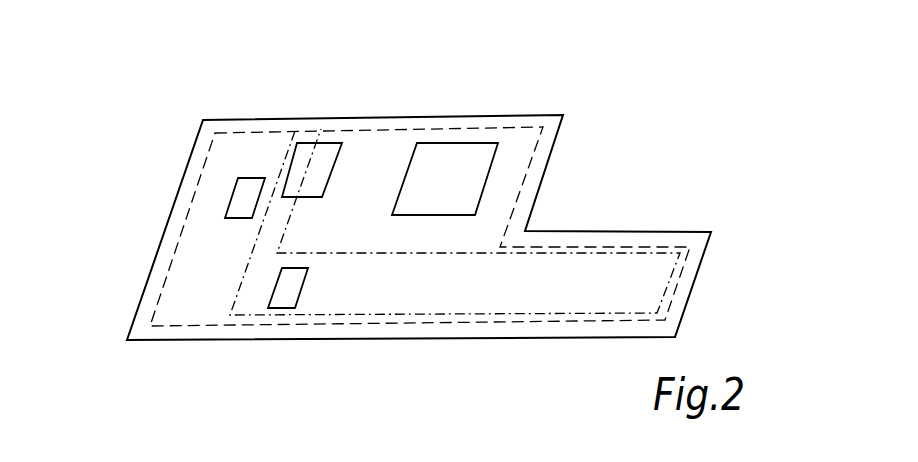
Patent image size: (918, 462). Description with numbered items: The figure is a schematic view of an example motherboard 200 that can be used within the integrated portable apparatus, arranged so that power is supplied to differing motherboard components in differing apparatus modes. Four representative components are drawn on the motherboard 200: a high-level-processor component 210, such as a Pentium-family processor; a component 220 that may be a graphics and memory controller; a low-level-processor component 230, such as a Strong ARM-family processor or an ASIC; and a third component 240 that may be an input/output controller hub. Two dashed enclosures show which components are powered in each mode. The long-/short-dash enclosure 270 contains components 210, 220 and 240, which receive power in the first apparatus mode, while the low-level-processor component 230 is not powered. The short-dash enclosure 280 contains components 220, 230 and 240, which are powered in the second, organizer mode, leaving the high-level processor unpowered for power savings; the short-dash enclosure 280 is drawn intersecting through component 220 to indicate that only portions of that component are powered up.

The motherboard 200 is at (708, 82).
The high-level-processor component 210 is at (457, 148).
The graphics and memory controller component 220 is at (325, 148).
The low-level-processor component 230 is at (243, 187).
The input/output controller hub component 240 is at (298, 285).
The long-/short-dash enclosure 270 is at (240, 282).
The short-dash enclosure 280 is at (187, 217).